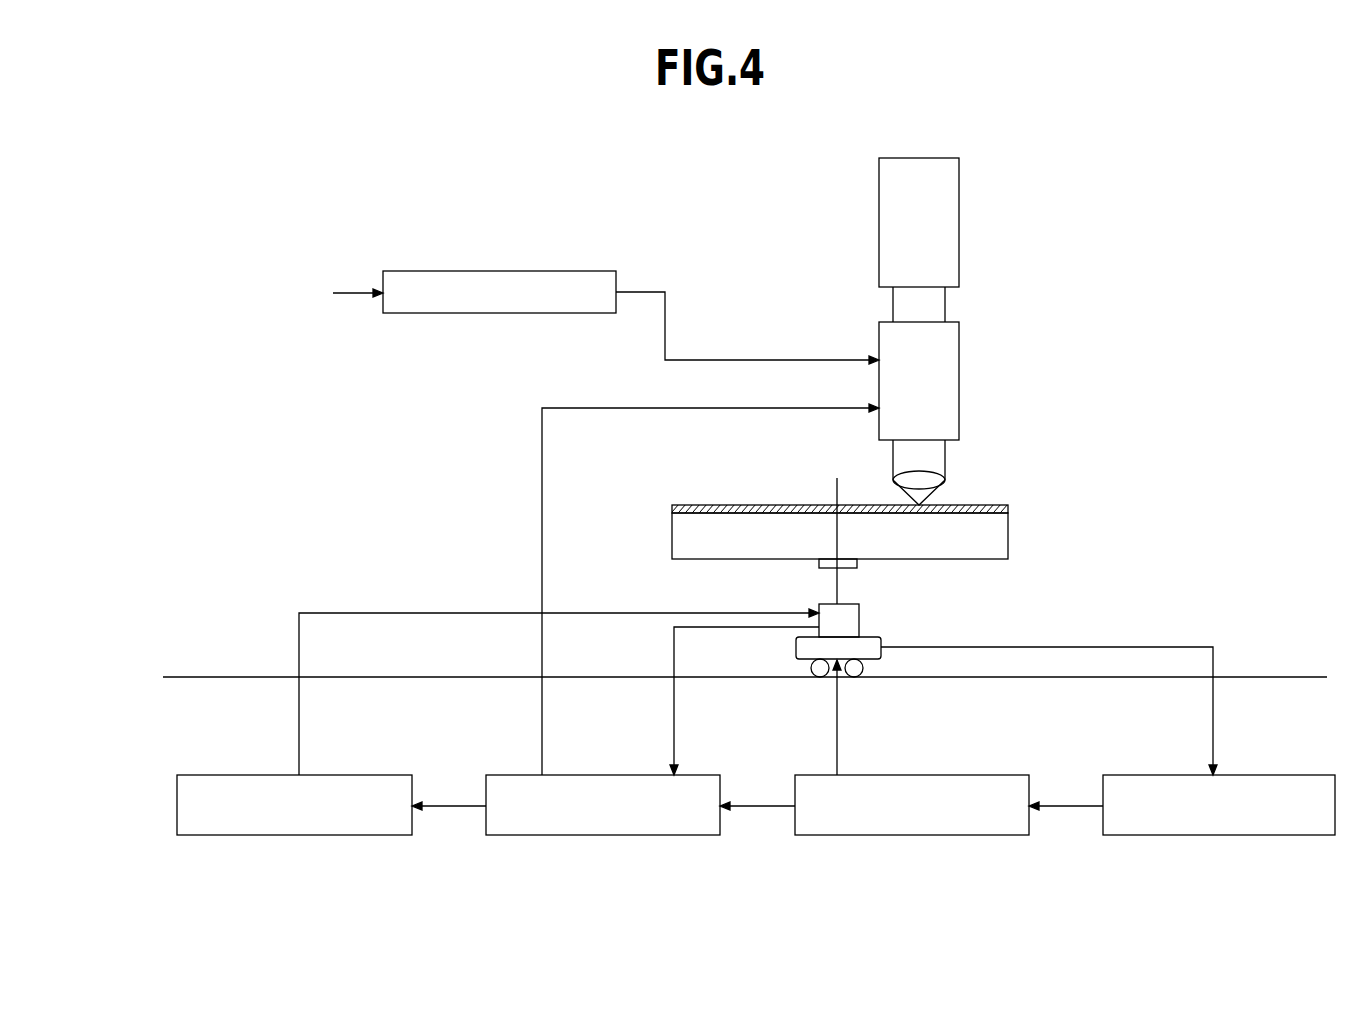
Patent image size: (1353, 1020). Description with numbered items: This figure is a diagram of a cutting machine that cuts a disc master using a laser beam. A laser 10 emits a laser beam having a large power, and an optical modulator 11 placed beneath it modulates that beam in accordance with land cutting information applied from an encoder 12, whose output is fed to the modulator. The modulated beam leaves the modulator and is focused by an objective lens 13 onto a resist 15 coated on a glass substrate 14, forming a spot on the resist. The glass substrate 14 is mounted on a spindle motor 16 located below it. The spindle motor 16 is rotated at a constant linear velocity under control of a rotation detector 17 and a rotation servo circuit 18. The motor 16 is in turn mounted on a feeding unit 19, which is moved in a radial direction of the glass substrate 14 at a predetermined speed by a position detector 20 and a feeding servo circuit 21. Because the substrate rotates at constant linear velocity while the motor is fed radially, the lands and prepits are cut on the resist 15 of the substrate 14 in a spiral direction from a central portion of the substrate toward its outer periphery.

The laser 10 is at (950, 228).
The optical modulator 11 is at (955, 370).
The encoder 12 is at (585, 271).
The objective lens 13 is at (945, 474).
The glass substrate 14 is at (1003, 528).
The resist 15 is at (985, 506).
The spindle motor 16 is at (855, 621).
The rotation detector 17 is at (637, 835).
The rotation servo circuit 18 is at (330, 835).
The feeding unit 19 is at (873, 645).
The position detector 20 is at (1218, 835).
The feeding servo circuit 21 is at (900, 835).